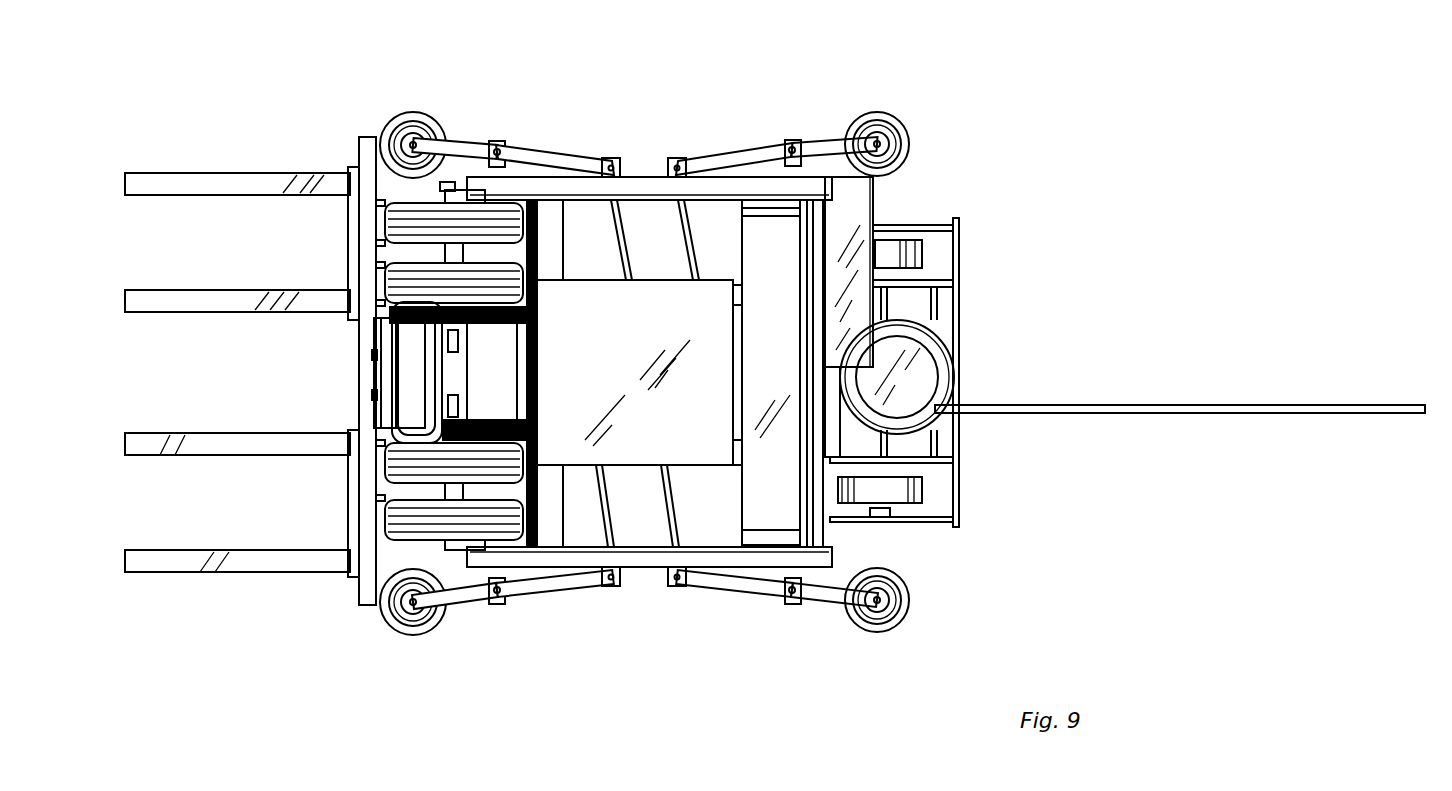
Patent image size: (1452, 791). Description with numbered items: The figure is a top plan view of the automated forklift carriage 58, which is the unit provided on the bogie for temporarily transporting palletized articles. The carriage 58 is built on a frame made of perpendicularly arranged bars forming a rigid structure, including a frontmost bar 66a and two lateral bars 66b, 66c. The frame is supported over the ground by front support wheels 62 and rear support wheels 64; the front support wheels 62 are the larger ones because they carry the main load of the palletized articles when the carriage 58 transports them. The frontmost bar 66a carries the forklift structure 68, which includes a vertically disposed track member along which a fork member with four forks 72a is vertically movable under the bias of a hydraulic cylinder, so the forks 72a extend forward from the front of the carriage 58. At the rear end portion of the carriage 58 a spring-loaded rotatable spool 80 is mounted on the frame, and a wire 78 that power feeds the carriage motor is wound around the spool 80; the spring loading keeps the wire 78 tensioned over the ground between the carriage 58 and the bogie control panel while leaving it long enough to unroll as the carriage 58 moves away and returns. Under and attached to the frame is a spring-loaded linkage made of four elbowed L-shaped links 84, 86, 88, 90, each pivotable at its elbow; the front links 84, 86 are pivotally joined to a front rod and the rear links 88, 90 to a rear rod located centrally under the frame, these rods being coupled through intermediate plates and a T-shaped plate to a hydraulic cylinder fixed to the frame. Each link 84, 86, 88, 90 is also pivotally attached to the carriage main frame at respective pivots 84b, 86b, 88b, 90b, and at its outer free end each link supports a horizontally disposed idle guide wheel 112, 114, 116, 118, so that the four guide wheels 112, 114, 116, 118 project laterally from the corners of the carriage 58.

The forklift carriage 58 is at (1052, 300).
The front support wheels 62 is at (390, 225).
The rear support wheels 64 is at (922, 255).
The frontmost bar 66a is at (517, 370).
The lateral bar 66b is at (650, 566).
The lateral bar 66c is at (645, 188).
The forklift structure 68 is at (370, 122).
The forks 72a is at (130, 302).
The wire 78 is at (1120, 404).
The spring-loaded rotatable spool 80 is at (935, 378).
The L-shaped link 84 is at (565, 160).
The pivotal attachment 84b is at (499, 142).
The L-shaped link 86 is at (520, 594).
The pivotal attachment 86b is at (482, 605).
The L-shaped link 88 is at (730, 592).
The pivotal attachment 88b is at (815, 606).
The L-shaped link 90 is at (735, 160).
The pivotal attachment 90b is at (800, 150).
The idle guide wheel 112 is at (412, 112).
The idle guide wheel 114 is at (392, 622).
The idle guide wheel 116 is at (893, 620).
The idle guide wheel 118 is at (905, 142).